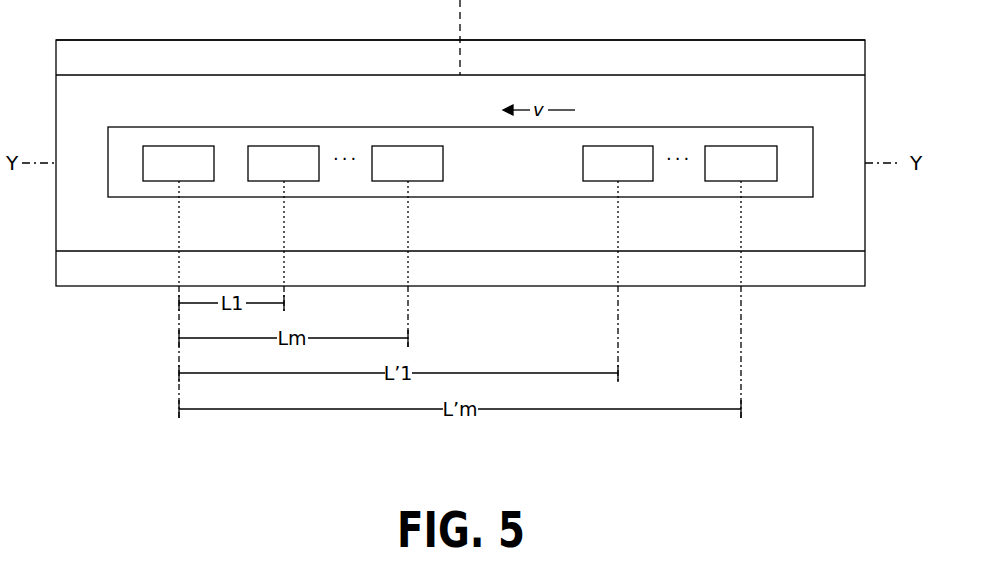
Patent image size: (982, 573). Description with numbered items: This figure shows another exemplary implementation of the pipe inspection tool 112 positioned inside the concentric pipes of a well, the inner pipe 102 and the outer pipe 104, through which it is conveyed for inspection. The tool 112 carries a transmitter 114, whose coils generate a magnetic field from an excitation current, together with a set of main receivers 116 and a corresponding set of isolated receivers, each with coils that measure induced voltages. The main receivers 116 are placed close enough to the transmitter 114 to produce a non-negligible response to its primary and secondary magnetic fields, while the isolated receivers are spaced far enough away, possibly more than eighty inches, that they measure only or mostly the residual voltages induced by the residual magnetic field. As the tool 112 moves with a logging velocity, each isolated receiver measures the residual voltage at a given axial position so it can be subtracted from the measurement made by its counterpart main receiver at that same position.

The inner pipe 102 is at (143, 75).
The outer pipe 104 is at (143, 40).
The pipe inspection tool 112 is at (143, 127).
The transmitter 114 is at (179, 146).
The receivers 116 is at (284, 146).